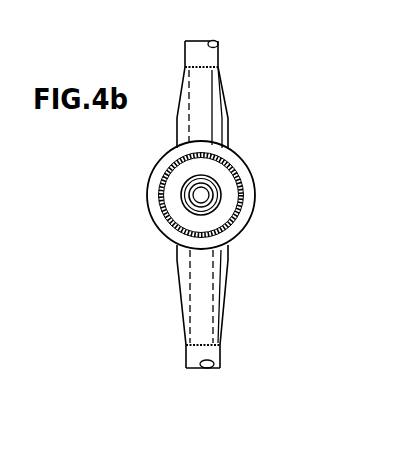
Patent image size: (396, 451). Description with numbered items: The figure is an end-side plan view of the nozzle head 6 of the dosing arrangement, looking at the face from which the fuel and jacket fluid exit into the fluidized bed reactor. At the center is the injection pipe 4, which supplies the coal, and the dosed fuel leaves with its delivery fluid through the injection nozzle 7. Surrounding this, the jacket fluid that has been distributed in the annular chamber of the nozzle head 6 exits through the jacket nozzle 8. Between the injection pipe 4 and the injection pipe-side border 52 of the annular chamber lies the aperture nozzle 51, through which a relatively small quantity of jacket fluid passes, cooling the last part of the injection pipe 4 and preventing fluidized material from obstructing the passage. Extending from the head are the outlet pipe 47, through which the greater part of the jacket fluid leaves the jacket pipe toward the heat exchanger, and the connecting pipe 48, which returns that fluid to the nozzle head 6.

The nozzle head 6 is at (250, 148).
The injection pipe 4 is at (240, 226).
The injection nozzle 7 is at (196, 193).
The jacket nozzle 8 is at (222, 183).
The aperture nozzle 51 is at (213, 197).
The injection pipe-side border 52 is at (185, 210).
The outlet pipe 47 is at (214, 108).
The connecting pipe 48 is at (216, 312).